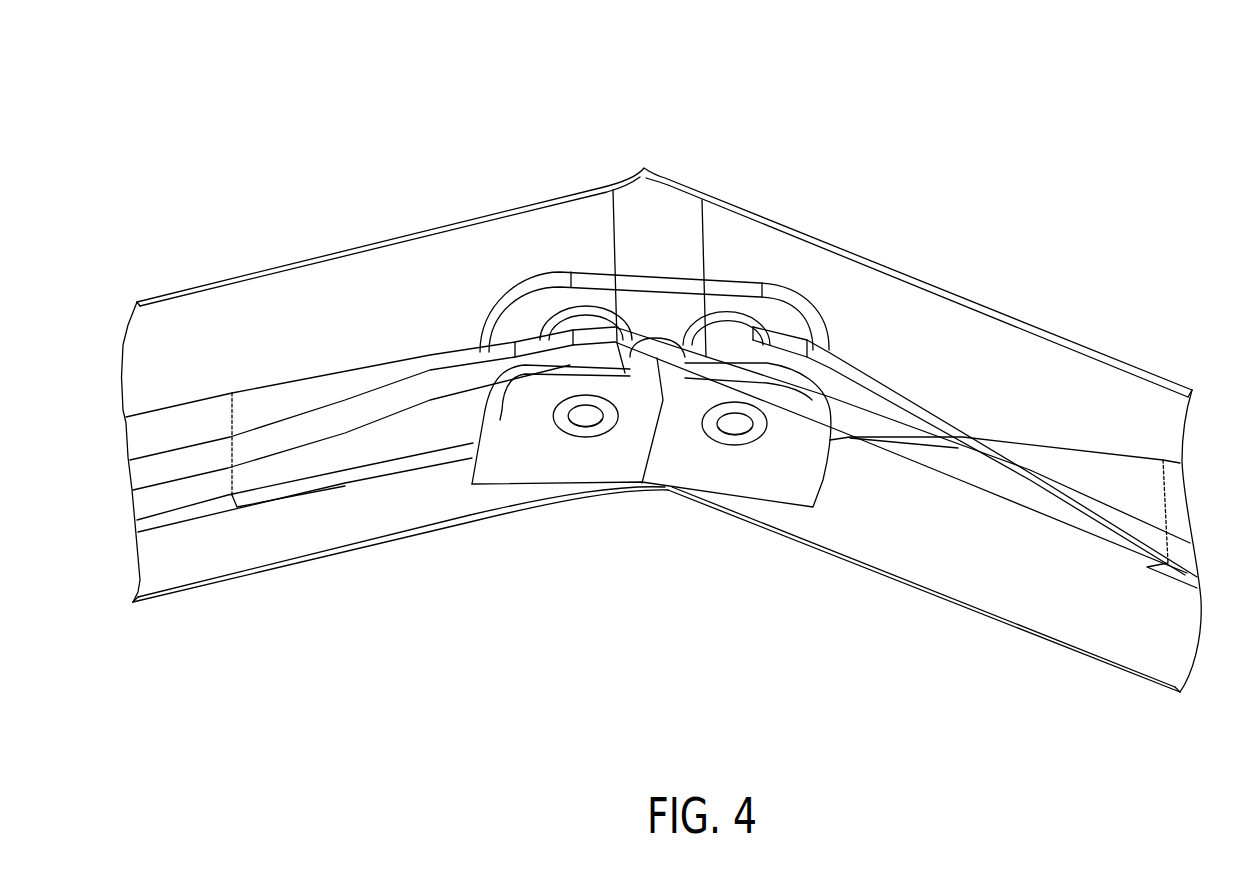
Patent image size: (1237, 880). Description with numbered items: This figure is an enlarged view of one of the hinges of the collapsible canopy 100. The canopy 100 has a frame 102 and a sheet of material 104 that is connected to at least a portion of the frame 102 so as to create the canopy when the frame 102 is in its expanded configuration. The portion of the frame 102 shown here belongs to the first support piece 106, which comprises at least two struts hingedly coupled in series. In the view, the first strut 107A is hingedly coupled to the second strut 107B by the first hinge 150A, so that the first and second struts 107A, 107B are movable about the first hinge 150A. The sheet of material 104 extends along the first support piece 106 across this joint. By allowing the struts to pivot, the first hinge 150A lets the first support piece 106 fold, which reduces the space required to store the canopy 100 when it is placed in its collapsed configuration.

The collapsible canopy 100 is at (635, 370).
The frame 102 is at (137, 432).
The sheet of material 104 is at (395, 463).
The first support piece 106 is at (916, 505).
The first strut 107A is at (207, 410).
The second strut 107B is at (1140, 477).
The first hinge 150A is at (679, 454).